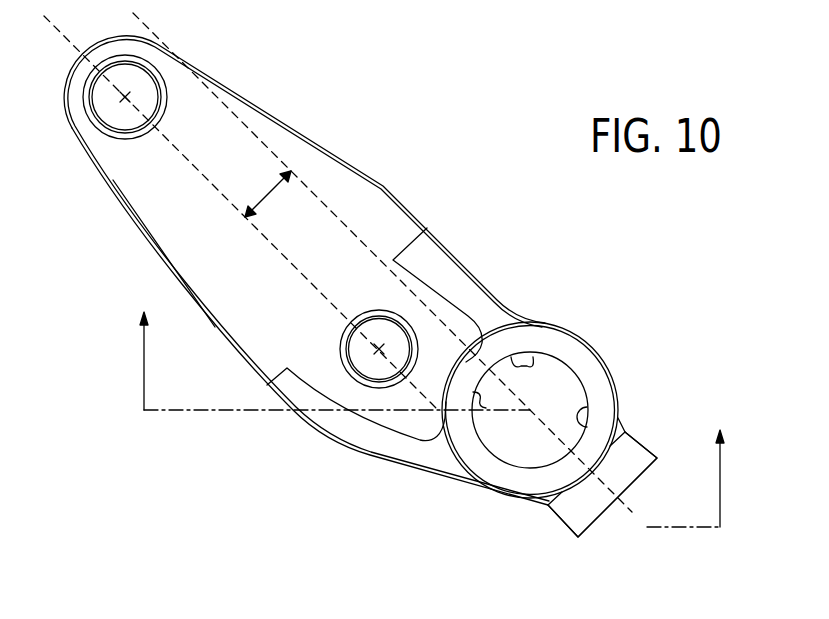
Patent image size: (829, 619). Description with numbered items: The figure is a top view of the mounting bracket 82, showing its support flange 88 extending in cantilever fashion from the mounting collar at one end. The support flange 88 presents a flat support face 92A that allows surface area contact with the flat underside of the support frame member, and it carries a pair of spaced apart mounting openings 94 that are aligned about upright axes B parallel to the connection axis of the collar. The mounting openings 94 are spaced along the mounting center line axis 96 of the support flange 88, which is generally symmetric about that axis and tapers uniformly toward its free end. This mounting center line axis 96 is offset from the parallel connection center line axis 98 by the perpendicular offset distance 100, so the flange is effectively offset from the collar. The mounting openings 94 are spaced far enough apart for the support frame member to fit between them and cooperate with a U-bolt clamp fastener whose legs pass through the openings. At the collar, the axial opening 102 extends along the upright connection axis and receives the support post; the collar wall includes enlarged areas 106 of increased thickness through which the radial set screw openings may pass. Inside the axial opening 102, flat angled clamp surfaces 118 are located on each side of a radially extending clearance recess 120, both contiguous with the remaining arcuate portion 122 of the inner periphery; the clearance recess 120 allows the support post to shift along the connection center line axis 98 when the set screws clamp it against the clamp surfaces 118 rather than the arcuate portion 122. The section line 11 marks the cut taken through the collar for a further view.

The mounting bracket 82 is at (459, 485).
The support flange 88 is at (150, 202).
The flat support face 92A is at (226, 266).
The mounting openings 94 is at (148, 72).
The upright axes B is at (125, 100).
The mounting center line axis 96 is at (292, 261).
The connection center line axis 98 is at (325, 200).
The perpendicular offset distance 100 is at (267, 190).
The axial opening 102 is at (558, 398).
The enlarged areas 106 is at (590, 512).
The clamp surfaces 118 is at (521, 362).
The clearance recess 120 is at (498, 371).
The arcuate portion 122 is at (583, 410).
The section line 11- 11 is at (431, 403).